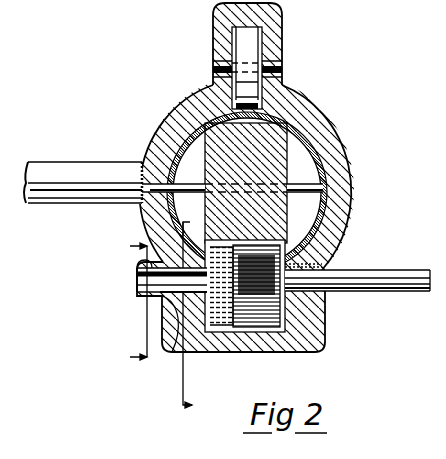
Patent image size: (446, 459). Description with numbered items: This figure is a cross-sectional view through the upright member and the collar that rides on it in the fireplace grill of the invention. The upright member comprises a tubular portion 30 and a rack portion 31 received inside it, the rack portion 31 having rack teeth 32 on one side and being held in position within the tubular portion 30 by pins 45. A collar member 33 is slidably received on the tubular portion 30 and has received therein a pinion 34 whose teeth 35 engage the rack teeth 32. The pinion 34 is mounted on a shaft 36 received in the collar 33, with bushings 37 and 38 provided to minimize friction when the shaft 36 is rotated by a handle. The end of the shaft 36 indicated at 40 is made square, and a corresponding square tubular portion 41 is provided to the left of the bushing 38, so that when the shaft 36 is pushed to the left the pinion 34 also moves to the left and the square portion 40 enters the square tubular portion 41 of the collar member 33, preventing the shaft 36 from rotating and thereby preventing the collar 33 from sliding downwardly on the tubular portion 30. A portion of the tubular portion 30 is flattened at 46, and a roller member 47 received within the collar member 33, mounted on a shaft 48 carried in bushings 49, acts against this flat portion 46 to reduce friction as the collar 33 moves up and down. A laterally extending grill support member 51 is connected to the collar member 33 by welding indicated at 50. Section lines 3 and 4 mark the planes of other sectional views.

The section line 3- 3 is at (194, 315).
The section line 4- 4 is at (130, 302).
The tubular portion 30 is at (322, 143).
The rack portion 31 is at (280, 170).
The rack teeth 32 is at (221, 286).
The collar member 33 is at (352, 185).
The pinion 34 is at (247, 286).
The teeth 35 is at (258, 345).
The shaft 36 is at (365, 272).
The bushing 37 is at (334, 256).
The bushing 38 is at (165, 310).
The square end of shaft 40 is at (146, 276).
The square tubular portion 41 is at (147, 294).
The pins 45 is at (185, 184).
The flat portion 46 is at (250, 118).
The roller member 47 is at (259, 45).
The shaft 48 is at (284, 69).
The bushings 49 is at (218, 62).
The welding 50 is at (141, 164).
The grill support member 51 is at (56, 164).